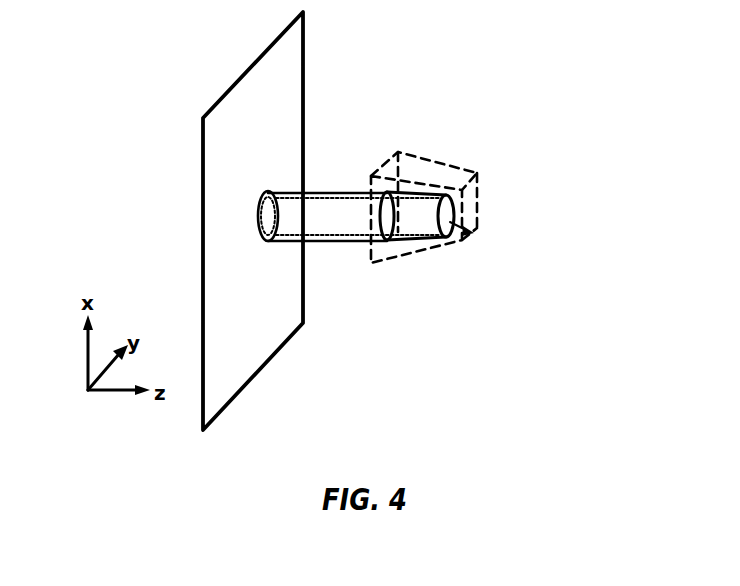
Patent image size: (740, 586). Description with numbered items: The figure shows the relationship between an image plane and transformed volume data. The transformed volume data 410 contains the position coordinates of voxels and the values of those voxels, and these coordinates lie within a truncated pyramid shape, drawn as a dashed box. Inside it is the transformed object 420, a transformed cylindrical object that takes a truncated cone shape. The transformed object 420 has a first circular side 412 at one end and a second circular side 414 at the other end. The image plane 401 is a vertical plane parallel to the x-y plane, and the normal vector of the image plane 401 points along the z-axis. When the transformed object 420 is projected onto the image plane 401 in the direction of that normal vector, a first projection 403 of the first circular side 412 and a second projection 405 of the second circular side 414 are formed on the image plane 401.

The image plane 401 is at (258, 59).
The first projection 403 is at (262, 195).
The second projection 405 is at (268, 242).
The transformed volume data 410 is at (410, 257).
The first circular side 412 is at (387, 193).
The second circular side 414 is at (476, 234).
The transformed object 420 is at (425, 192).